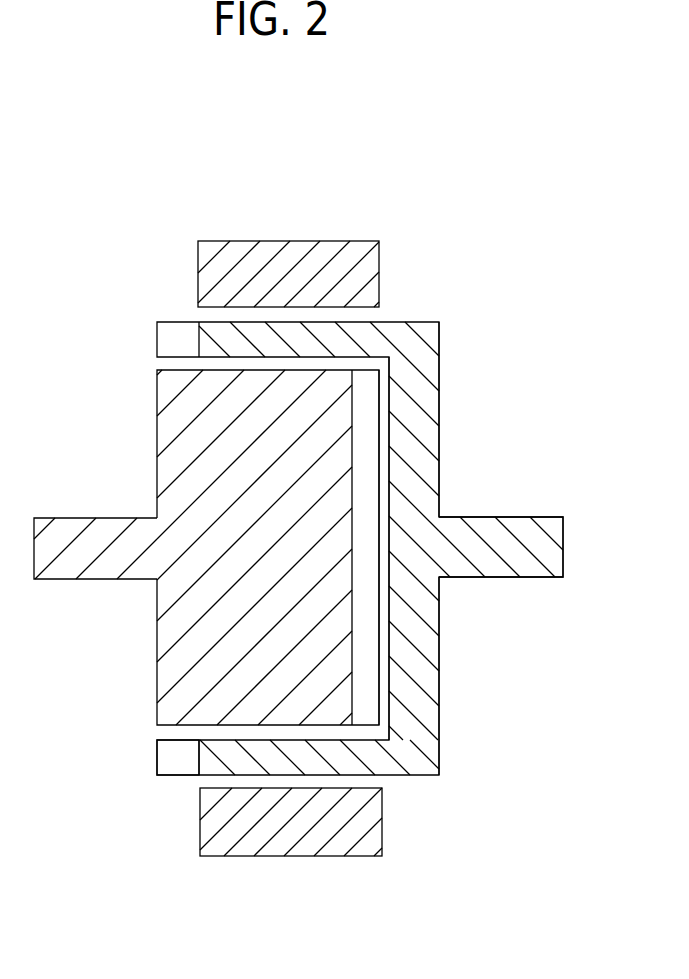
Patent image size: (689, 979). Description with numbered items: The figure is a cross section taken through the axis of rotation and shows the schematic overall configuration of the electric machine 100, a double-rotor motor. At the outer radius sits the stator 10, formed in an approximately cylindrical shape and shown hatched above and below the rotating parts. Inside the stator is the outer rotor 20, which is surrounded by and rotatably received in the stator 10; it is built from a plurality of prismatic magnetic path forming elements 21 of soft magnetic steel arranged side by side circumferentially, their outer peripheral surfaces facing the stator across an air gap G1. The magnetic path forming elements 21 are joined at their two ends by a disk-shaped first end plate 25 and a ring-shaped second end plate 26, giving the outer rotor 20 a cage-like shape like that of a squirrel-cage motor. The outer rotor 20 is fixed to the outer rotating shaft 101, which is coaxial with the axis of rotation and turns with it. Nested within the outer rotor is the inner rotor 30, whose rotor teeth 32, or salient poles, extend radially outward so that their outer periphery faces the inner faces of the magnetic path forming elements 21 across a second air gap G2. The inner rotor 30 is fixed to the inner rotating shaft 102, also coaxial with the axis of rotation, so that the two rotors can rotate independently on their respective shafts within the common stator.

The electric machine 100 is at (412, 177).
The stator 10 is at (302, 240).
The outer rotor 20 is at (372, 762).
The magnetic path forming element 21 is at (277, 763).
The first end plate 25 is at (420, 633).
The second end plate 26 is at (177, 758).
The inner rotor 30 is at (207, 707).
The rotor tooth 32 is at (243, 710).
The outer rotating shaft 101 is at (503, 535).
The inner rotating shaft 102 is at (72, 532).
The air gap G1 is at (220, 315).
The air gap G2 is at (183, 365).